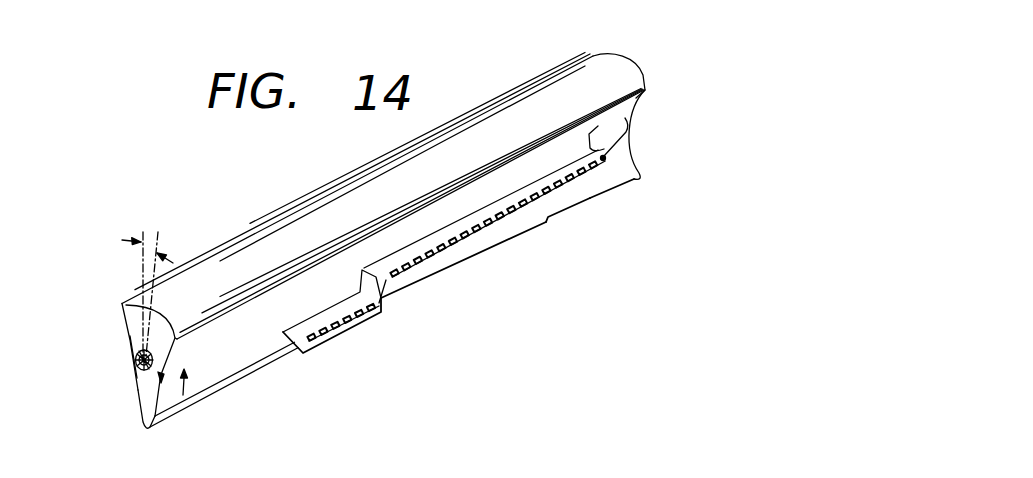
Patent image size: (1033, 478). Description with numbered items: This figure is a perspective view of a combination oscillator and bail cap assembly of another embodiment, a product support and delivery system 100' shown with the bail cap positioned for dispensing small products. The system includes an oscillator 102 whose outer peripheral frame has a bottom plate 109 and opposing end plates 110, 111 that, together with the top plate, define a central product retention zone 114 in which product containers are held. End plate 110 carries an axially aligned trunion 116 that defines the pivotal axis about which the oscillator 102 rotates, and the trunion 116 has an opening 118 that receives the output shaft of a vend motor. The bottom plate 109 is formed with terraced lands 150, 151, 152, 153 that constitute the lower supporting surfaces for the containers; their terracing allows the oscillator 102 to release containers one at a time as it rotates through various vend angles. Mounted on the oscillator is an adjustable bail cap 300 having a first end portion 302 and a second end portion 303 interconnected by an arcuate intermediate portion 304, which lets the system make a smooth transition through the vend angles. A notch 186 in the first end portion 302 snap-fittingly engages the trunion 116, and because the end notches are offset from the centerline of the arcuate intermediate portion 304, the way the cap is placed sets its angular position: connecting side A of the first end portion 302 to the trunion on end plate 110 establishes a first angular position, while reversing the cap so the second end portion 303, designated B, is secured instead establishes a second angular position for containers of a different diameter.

The product support and delivery system 100' is at (428, 189).
The oscillator 102 is at (615, 213).
The bottom plate 109 is at (285, 358).
The end plate 110 is at (140, 426).
The end plate 111 is at (620, 163).
The central product retention zone 114 is at (183, 395).
The trunion 116 is at (135, 371).
The opening 118 is at (138, 354).
The terraced land 150 is at (224, 377).
The terraced land 151 is at (353, 323).
The terraced land 152 is at (447, 254).
The terraced land 153 is at (550, 219).
The notch 186 is at (133, 388).
The adjustable bail cap 300 is at (346, 186).
The first end portion 302 is at (124, 306).
The second end portion 303 is at (643, 112).
The arcuate intermediate portion 304 is at (249, 236).